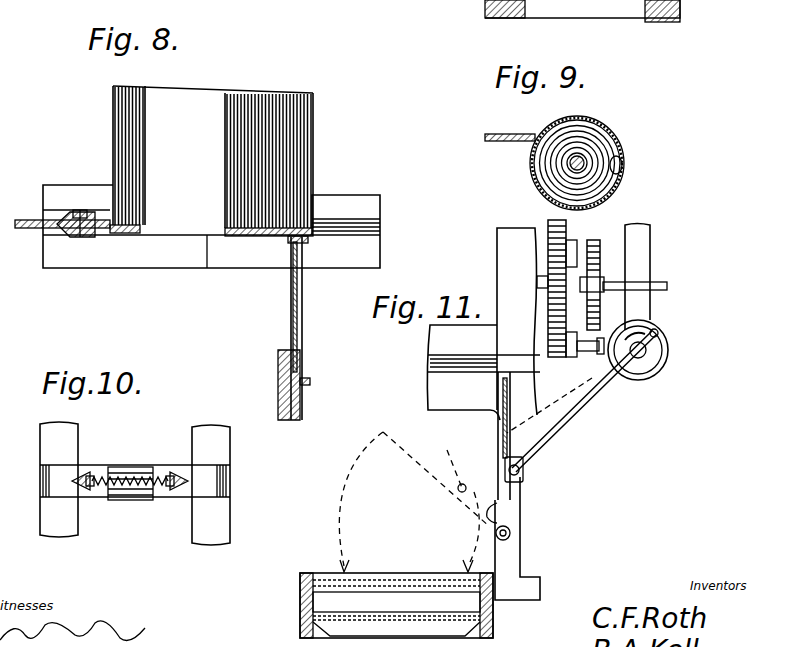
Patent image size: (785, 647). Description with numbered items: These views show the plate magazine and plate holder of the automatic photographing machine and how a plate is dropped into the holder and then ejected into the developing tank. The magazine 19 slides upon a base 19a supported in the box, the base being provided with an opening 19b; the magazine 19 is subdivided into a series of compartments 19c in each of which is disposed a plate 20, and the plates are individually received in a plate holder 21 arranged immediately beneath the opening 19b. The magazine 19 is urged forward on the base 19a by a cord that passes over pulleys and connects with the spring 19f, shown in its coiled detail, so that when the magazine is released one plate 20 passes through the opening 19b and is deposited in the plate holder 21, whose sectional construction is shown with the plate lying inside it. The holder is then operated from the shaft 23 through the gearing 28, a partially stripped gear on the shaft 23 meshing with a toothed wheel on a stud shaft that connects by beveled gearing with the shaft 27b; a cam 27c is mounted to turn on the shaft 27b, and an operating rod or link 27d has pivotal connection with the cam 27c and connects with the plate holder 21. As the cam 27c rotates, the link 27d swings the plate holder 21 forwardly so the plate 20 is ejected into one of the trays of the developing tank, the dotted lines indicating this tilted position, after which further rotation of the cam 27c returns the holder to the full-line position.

In FIG. 8, the magazine 19 is at (185, 97).
In FIG. 11, the magazine 19 is at (499, 262).
In FIG. 8, the base 19a is at (238, 236).
In FIG. 8, the opening 19b is at (315, 213).
In FIG. 8, the compartments 19c is at (288, 94).
In FIG. 9, the spring 19f is at (592, 140).
In FIG. 8, the plates 20 is at (305, 94).
In FIG. 10, the plates 20 is at (158, 500).
In FIG. 11, the plates 20 is at (398, 574).
In FIG. 8, the plate holder 21 is at (290, 330).
In FIG. 10, the plate holder 21 is at (158, 470).
In FIG. 11, the plate holder 21 is at (497, 432).
In FIG. 11, the shaft 23 is at (662, 287).
In FIG. 11, the shaft 27b is at (668, 350).
In FIG. 11, the cam 27c is at (648, 372).
In FIG. 11, the operating rod or link 27d is at (553, 436).
In FIG. 11, the gearing 28 is at (576, 248).